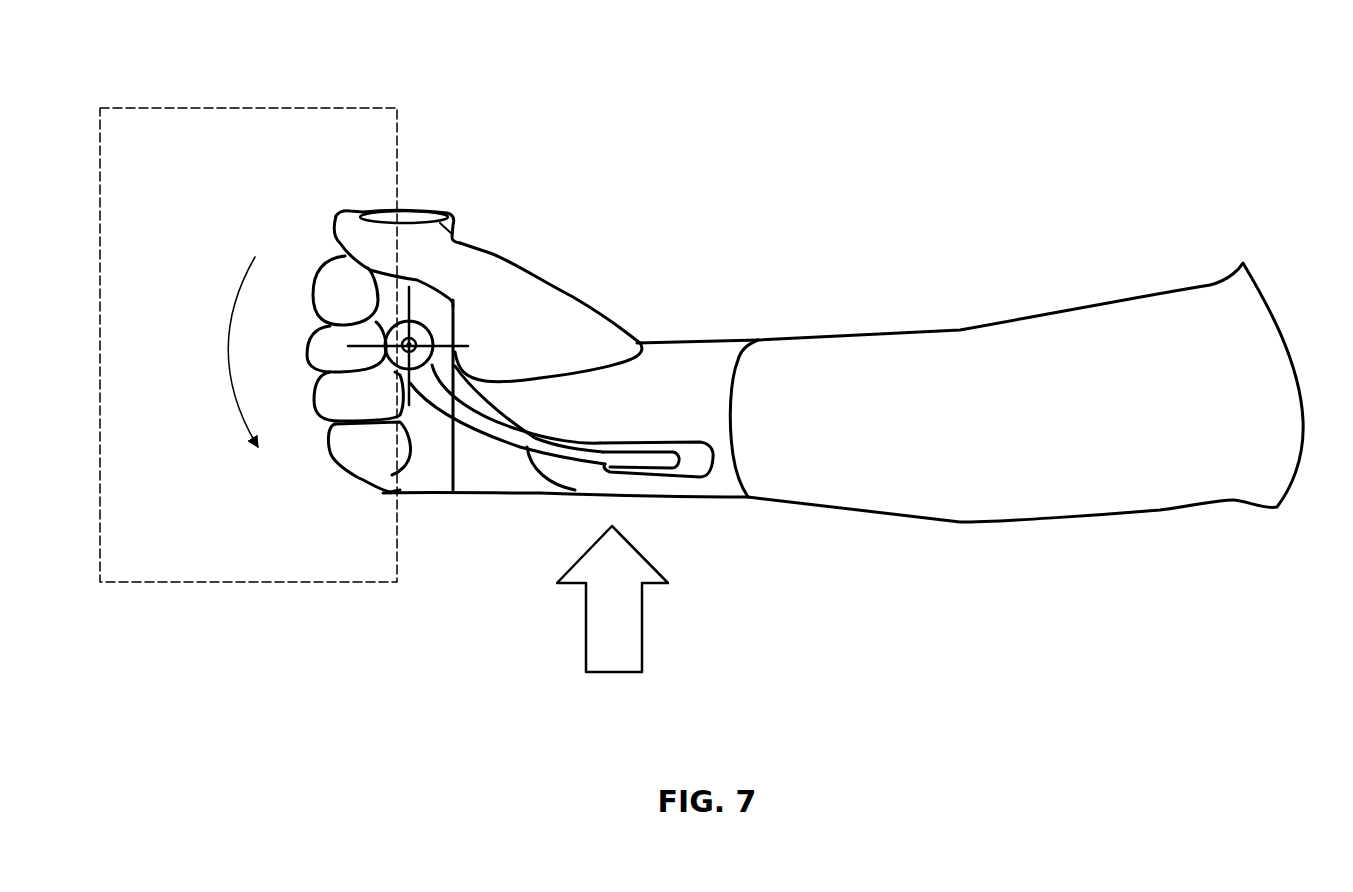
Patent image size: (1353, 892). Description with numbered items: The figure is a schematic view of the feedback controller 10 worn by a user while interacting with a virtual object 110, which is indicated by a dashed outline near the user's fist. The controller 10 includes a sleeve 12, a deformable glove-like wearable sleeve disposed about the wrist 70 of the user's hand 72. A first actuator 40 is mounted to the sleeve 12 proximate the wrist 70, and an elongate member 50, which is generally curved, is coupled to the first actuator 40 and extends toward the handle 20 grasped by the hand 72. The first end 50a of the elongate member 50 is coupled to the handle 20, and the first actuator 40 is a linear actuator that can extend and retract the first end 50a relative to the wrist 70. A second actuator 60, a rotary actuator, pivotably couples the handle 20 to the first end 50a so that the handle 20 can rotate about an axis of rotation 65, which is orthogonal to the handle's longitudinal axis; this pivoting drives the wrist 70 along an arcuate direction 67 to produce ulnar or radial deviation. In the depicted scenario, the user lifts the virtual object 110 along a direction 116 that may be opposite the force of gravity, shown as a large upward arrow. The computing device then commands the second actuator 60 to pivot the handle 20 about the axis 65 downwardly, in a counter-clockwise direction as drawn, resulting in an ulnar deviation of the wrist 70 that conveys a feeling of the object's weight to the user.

The feedback controller 10 is at (805, 363).
The sleeve 12 is at (718, 350).
The handle 20 is at (445, 207).
The first actuator 40 is at (697, 460).
The elongate member 50 is at (507, 464).
The first end 50a is at (422, 414).
The second actuator 60 is at (420, 333).
The axis of rotation 65 is at (462, 343).
The arcuate direction 67 is at (229, 336).
The wrist 70 is at (606, 348).
The hand 72 is at (576, 260).
The virtual object 110 is at (212, 107).
The direction 116 is at (642, 626).